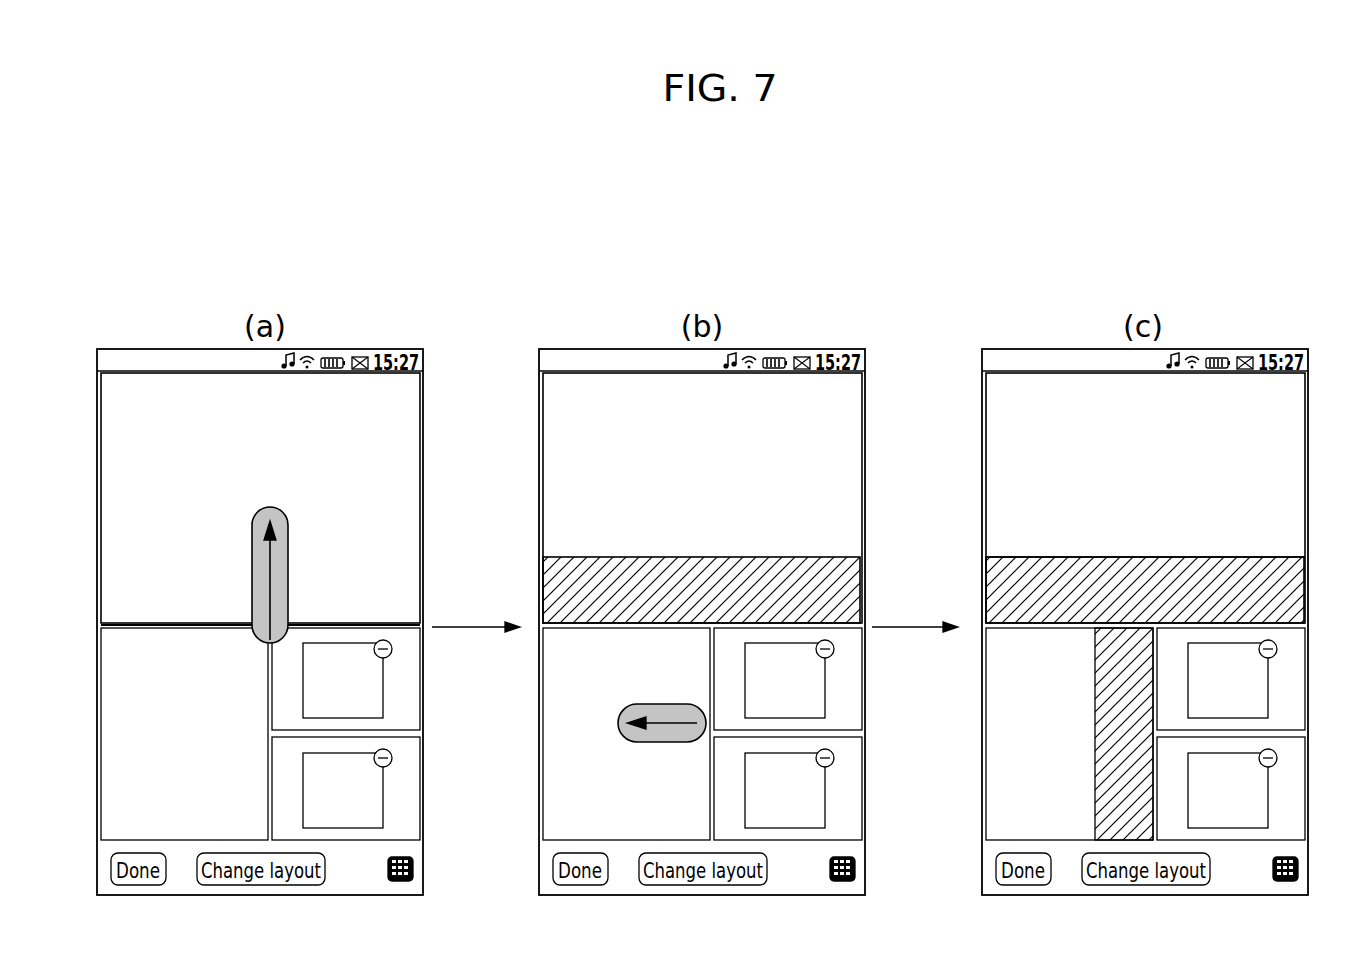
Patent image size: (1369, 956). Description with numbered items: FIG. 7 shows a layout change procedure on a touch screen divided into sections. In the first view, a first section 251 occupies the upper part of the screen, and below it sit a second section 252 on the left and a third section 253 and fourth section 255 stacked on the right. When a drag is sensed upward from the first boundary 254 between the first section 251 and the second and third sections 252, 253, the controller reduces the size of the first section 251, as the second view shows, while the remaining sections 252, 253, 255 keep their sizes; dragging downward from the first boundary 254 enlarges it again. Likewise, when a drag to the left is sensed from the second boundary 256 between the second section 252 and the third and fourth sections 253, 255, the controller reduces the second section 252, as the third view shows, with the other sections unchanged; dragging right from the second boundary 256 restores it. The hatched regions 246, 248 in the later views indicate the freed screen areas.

The first section 251 is at (413, 487).
The second section 252 is at (108, 688).
The third section 253 is at (413, 693).
The first boundary 254 is at (132, 625).
The fourth section 255 is at (413, 794).
The second boundary 256 is at (712, 785).
The newly added horizontal section 246 is at (1297, 622).
The clock widget section 248 is at (1297, 795).